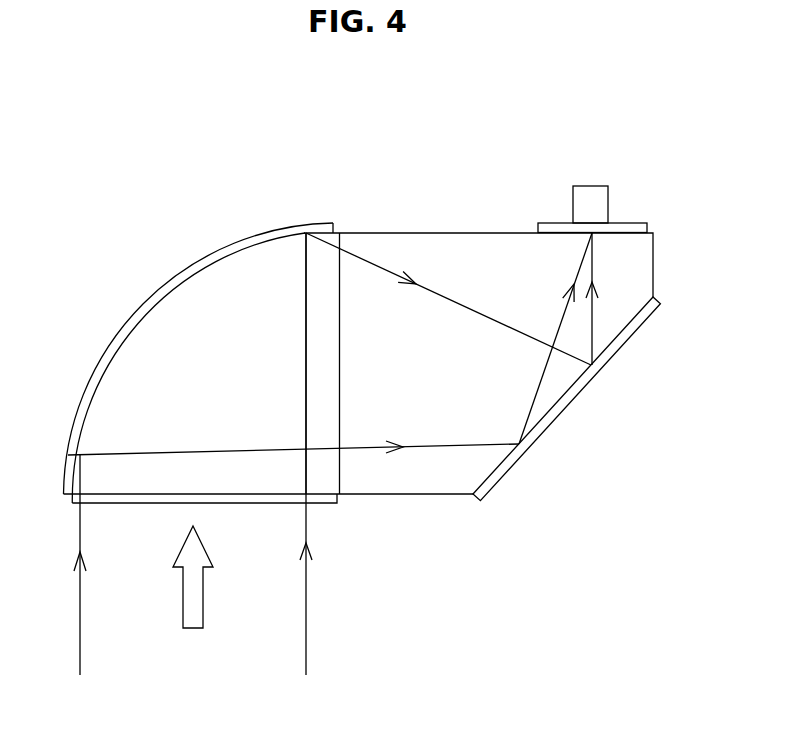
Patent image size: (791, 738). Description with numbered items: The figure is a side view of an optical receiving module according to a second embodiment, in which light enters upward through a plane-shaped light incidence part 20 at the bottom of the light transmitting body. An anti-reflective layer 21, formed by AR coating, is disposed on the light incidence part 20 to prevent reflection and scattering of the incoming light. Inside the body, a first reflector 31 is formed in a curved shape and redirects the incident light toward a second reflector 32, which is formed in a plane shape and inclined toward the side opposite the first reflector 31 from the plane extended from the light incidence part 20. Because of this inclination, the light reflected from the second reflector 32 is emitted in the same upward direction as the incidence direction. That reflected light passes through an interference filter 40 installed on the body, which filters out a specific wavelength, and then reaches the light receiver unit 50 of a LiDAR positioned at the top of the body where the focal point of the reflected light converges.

The light incidence part 20 is at (117, 493).
The anti-reflective layer 21 is at (93, 500).
The first reflector 31 is at (215, 255).
The second reflector 32 is at (563, 393).
The interference filter 40 is at (555, 222).
The light receiver unit 50 is at (590, 217).